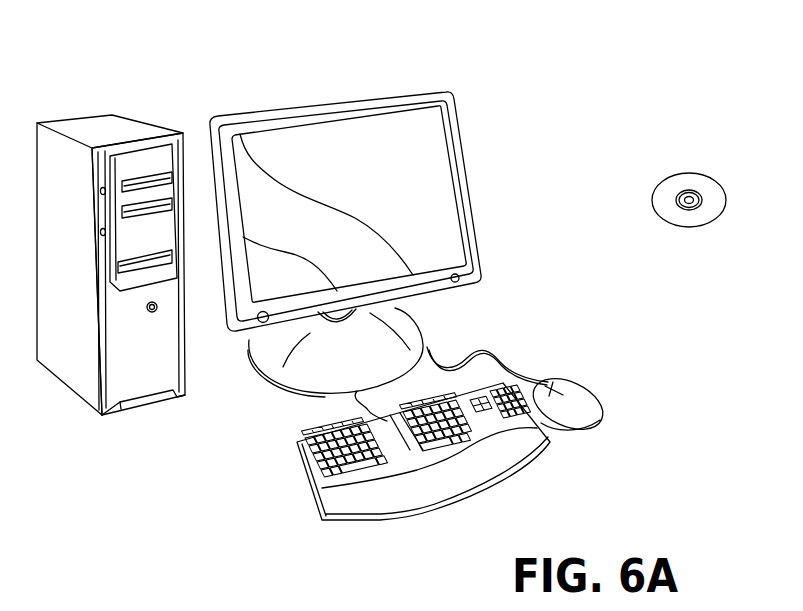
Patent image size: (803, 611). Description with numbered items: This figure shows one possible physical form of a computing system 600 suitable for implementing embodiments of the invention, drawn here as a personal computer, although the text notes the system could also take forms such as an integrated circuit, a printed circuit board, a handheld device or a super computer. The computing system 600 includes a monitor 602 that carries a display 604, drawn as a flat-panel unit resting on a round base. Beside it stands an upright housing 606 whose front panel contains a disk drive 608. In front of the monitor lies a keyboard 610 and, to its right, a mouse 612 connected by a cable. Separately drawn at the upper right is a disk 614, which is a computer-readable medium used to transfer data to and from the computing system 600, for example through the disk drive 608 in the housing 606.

The computing system 600 is at (632, 70).
The monitor 602 is at (390, 244).
The display 604 is at (423, 137).
The housing 606 is at (135, 234).
The disk drive 608 is at (172, 264).
The keyboard 610 is at (310, 485).
The mouse 612 is at (593, 392).
The disk 614 is at (712, 175).